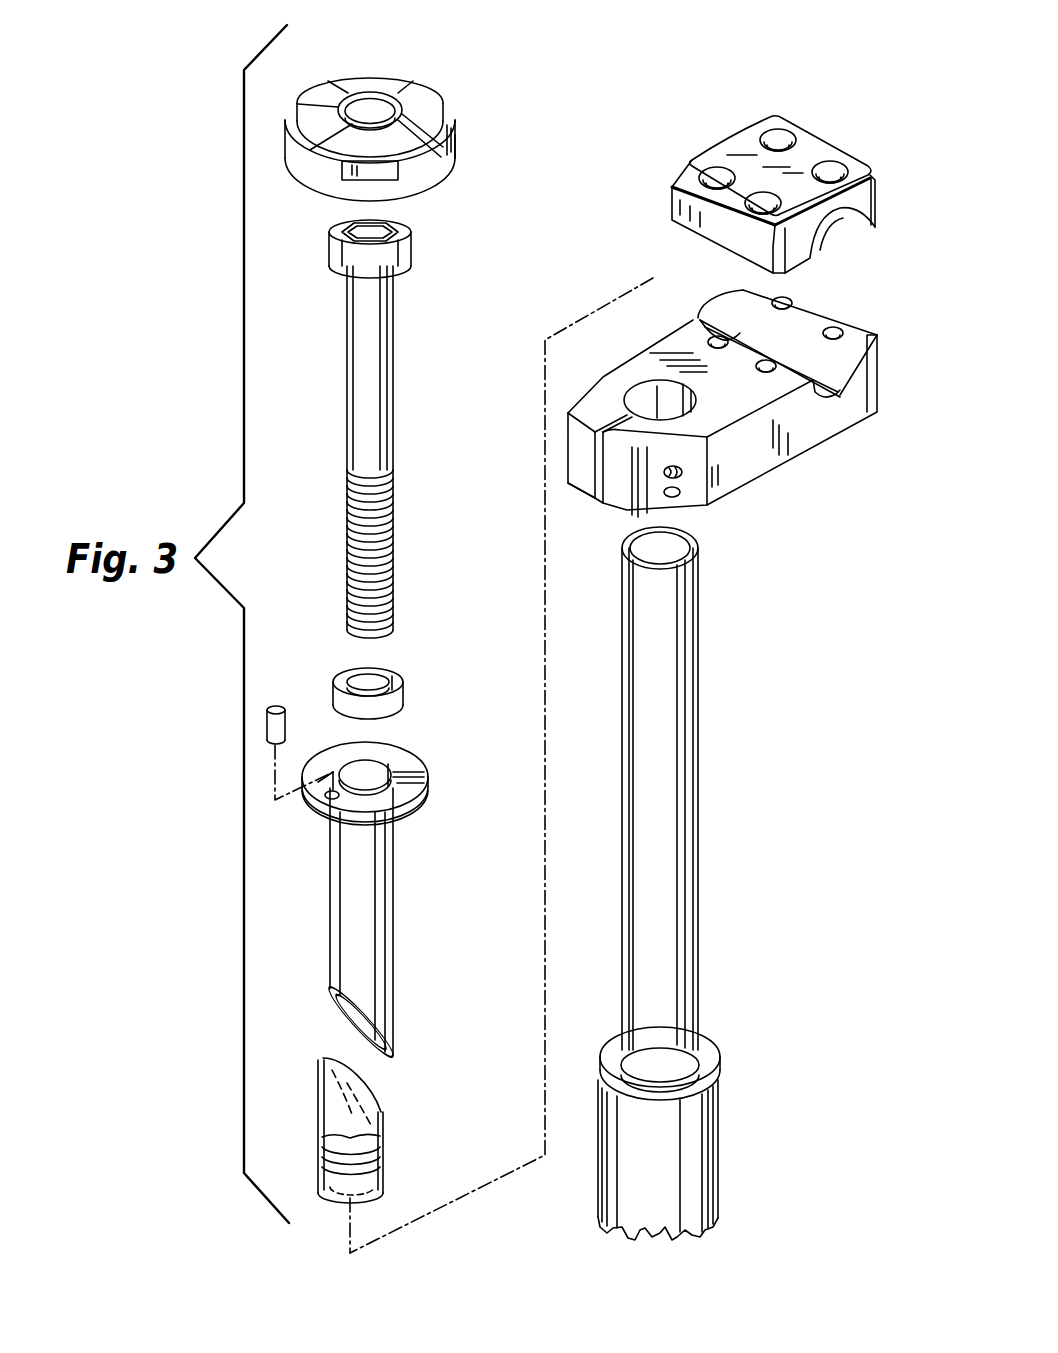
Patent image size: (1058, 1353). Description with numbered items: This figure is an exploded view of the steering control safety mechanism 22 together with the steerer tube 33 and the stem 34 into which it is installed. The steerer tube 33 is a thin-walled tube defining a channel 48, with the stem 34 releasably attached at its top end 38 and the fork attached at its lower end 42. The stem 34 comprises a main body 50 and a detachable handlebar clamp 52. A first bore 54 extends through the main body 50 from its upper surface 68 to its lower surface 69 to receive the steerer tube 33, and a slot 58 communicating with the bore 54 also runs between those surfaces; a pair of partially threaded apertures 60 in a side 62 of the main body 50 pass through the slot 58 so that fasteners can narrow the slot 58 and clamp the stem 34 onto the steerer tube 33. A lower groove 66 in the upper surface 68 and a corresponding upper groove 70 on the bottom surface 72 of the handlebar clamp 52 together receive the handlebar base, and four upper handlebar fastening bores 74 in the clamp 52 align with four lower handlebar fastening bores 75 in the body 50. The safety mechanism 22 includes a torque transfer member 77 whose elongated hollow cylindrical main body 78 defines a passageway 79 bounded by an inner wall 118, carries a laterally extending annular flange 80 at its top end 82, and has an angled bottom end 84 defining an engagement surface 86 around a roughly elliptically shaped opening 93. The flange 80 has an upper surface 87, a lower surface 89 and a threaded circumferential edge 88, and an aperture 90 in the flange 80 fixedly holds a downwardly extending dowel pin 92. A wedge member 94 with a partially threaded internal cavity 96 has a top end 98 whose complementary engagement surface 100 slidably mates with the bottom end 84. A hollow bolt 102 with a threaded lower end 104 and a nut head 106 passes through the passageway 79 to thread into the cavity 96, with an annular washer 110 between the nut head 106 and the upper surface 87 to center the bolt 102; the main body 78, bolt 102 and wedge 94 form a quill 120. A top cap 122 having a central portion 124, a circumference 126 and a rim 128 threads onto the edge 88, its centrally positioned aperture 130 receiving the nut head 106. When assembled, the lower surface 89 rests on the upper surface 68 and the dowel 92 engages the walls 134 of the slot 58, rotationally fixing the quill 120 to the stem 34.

The safety mechanism 22 is at (522, 110).
The steerer tube 33 is at (692, 712).
The stem 34 is at (827, 423).
The top end 38 is at (692, 562).
The lower end 42 is at (680, 1015).
The channel 48 is at (670, 543).
The main body 50 is at (878, 418).
The handlebar clamp 52 is at (705, 153).
The first bore 54 is at (643, 390).
The slot 58 is at (617, 420).
The partially threaded apertures 60 is at (667, 478).
The side 62 is at (700, 487).
The lower groove 66 is at (748, 305).
The upper surface 68 is at (708, 338).
The lower surface 69 is at (793, 455).
The upper groove 70 is at (875, 200).
The bottom surface 72 is at (845, 226).
The upper handlebar fastening bores 74 is at (760, 195).
The lower handlebar fastening bores 75 is at (712, 348).
The torque transfer member 77 is at (397, 935).
The main body 78 is at (397, 870).
The passageway 79 is at (372, 782).
The annular flange 80 is at (423, 762).
The top end 82 is at (355, 840).
The angled bottom end 84 is at (367, 997).
The engagement surface 86 is at (393, 1055).
The upper surface 87 is at (430, 778).
The threaded circumferential edge 88 is at (422, 805).
The lower surface 89 is at (407, 827).
The aperture 90 is at (330, 800).
The dowel pin 92 is at (274, 706).
The elliptically shaped opening 93 is at (347, 955).
The wedge member 94 is at (328, 1120).
The partially threaded internal cavity 96 is at (380, 1177).
The top end 98 is at (325, 1060).
The complementary engagement surface 100 is at (363, 1085).
The hollow bolt 102 is at (390, 440).
The threaded lower end 104 is at (387, 573).
The nut head 106 is at (403, 270).
The annular washer 110 is at (397, 676).
The inner wall 118 is at (360, 1022).
The quill 120 is at (318, 432).
The top cap 122 is at (428, 180).
The central portion 124 is at (403, 92).
The circumference 126 is at (452, 158).
The rim 128 is at (313, 177).
The centrally positioned aperture 130 is at (368, 93).
The walls 134 is at (597, 473).